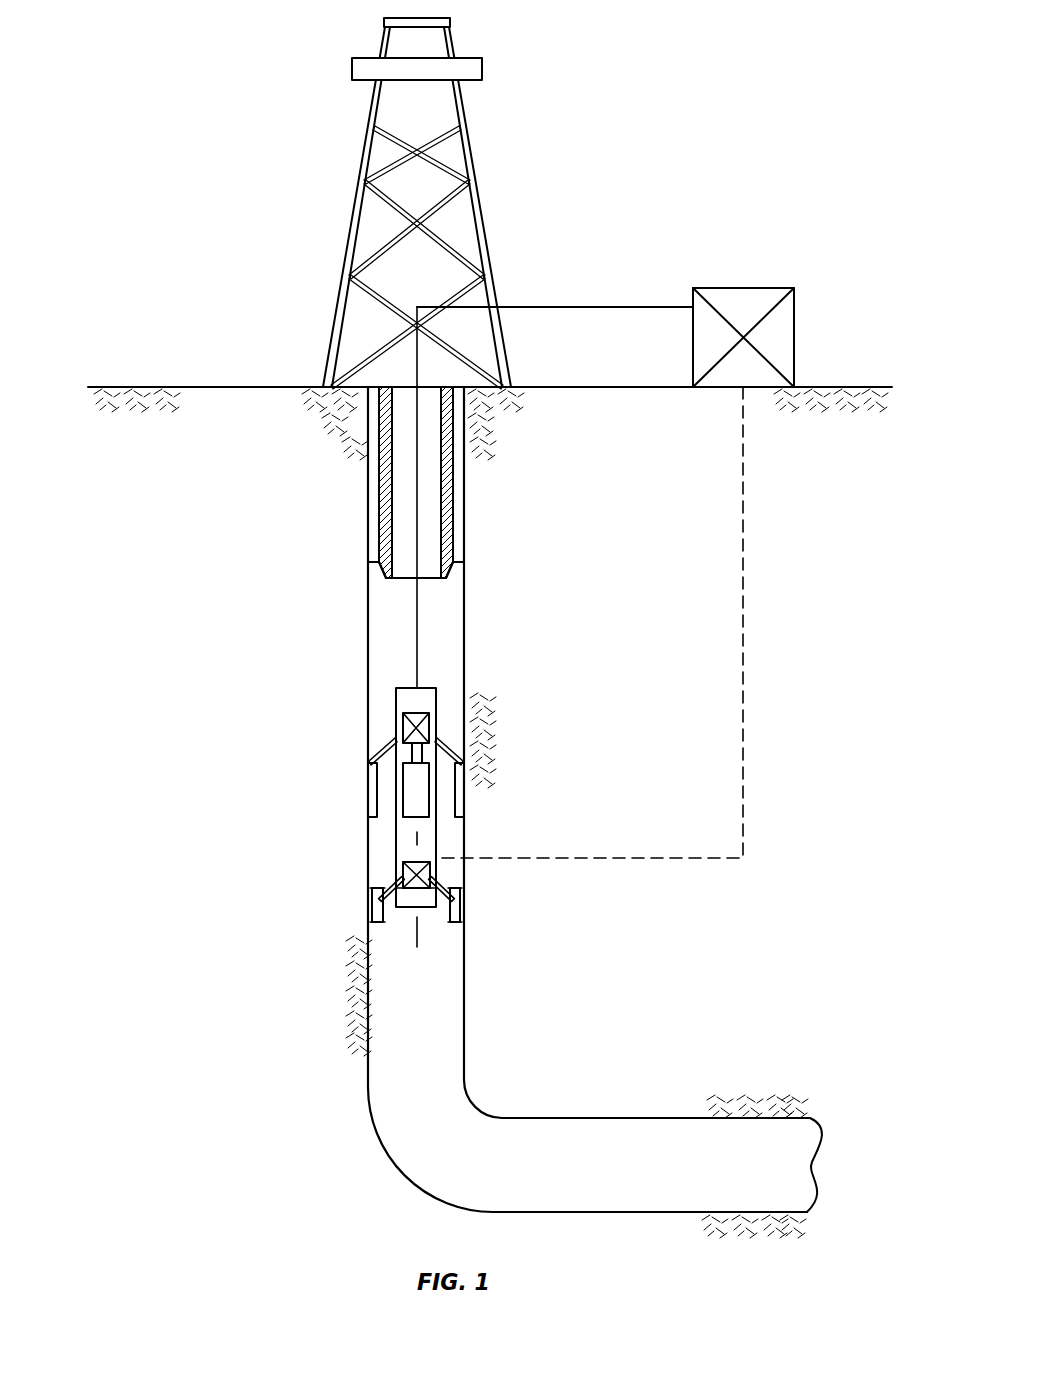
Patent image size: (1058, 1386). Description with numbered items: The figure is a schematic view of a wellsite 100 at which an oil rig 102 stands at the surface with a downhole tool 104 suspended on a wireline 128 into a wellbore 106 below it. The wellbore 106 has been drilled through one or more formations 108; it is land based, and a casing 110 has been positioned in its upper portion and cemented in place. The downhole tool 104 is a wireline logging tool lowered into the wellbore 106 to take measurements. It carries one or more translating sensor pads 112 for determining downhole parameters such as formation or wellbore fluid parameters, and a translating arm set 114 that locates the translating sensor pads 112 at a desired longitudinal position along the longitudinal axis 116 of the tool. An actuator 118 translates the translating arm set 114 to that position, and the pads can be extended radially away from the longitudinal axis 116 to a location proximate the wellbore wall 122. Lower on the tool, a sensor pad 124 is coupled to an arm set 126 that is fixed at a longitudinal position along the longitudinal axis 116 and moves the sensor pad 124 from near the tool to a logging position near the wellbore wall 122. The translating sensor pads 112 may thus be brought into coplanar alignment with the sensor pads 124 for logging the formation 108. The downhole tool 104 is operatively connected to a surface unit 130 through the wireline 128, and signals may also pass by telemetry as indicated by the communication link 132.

The wellsite 100 is at (805, 67).
The oil rig 102 is at (478, 174).
The downhole tool 104 is at (437, 683).
The wellbore 106 is at (653, 1184).
The formation 108 is at (670, 652).
The casing 110 is at (453, 492).
The translating sensor pad 112 is at (412, 800).
The translating arm set 114 is at (455, 745).
The longitudinal axis 116 is at (417, 934).
The actuator 118 is at (402, 727).
The wellbore wall 122 is at (464, 955).
The sensor pad 124 is at (370, 912).
The arm set 126 is at (383, 884).
The wireline 128 is at (420, 602).
The surface unit 130 is at (794, 311).
The communication link 132 is at (743, 572).